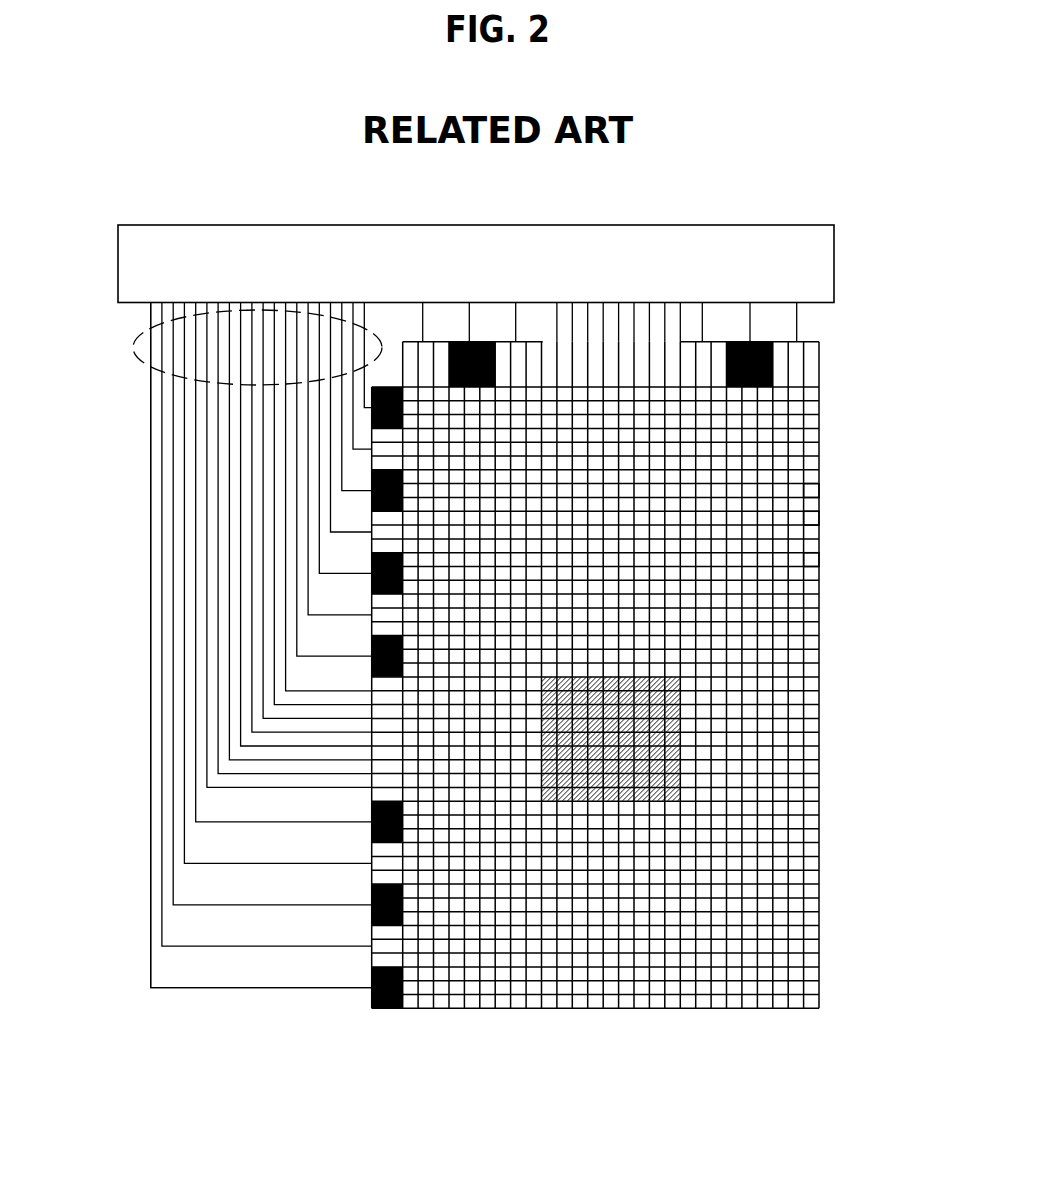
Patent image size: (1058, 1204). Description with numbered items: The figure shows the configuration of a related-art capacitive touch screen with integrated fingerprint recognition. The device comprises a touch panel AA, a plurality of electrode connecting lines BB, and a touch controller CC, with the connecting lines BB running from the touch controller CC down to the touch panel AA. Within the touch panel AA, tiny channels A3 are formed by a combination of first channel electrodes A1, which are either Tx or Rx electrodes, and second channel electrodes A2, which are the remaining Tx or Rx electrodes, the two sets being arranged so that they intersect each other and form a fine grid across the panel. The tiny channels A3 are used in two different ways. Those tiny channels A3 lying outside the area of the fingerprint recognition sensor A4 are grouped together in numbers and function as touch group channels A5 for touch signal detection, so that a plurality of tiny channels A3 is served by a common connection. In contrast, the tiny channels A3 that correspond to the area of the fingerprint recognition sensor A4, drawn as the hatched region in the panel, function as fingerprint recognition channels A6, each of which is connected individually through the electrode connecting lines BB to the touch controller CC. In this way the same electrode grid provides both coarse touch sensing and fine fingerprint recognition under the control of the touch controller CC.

The touch controller CC is at (834, 262).
The electrode connecting lines BB is at (133, 348).
The touch panel AA is at (862, 966).
The first channel electrodes A1 is at (819, 490).
The second channel electrodes A2 is at (810, 512).
The tiny channels A3 is at (803, 554).
The fingerprint recognition sensor A4 is at (700, 735).
The touch group channels A5 is at (262, 990).
The fingerprint recognition channels A6 is at (207, 752).